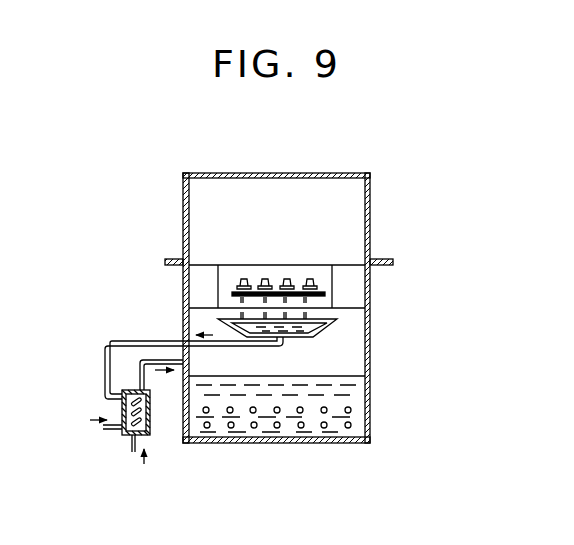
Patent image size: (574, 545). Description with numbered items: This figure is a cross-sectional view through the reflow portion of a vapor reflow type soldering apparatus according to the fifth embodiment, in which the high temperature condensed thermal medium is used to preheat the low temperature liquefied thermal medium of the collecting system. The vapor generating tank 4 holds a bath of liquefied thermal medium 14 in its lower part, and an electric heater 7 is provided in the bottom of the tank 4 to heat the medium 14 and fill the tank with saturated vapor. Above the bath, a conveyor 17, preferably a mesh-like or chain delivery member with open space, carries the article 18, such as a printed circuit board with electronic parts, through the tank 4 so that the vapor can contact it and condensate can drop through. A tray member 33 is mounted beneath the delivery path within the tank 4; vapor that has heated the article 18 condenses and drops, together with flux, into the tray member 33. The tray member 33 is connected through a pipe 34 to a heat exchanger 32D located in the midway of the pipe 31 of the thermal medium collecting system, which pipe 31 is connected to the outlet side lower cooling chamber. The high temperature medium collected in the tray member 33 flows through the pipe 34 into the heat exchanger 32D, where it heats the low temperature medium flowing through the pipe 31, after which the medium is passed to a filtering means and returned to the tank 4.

The vapor generating tank 4 is at (330, 173).
The conveyor 17 is at (232, 298).
The article 18 is at (325, 296).
The tray member 33 is at (318, 327).
The pipe 34 is at (104, 346).
The pipe 31 is at (157, 358).
The heat exchanger 32D is at (152, 414).
The liquefied thermal medium 14 is at (337, 402).
The electric heater 7 is at (352, 425).